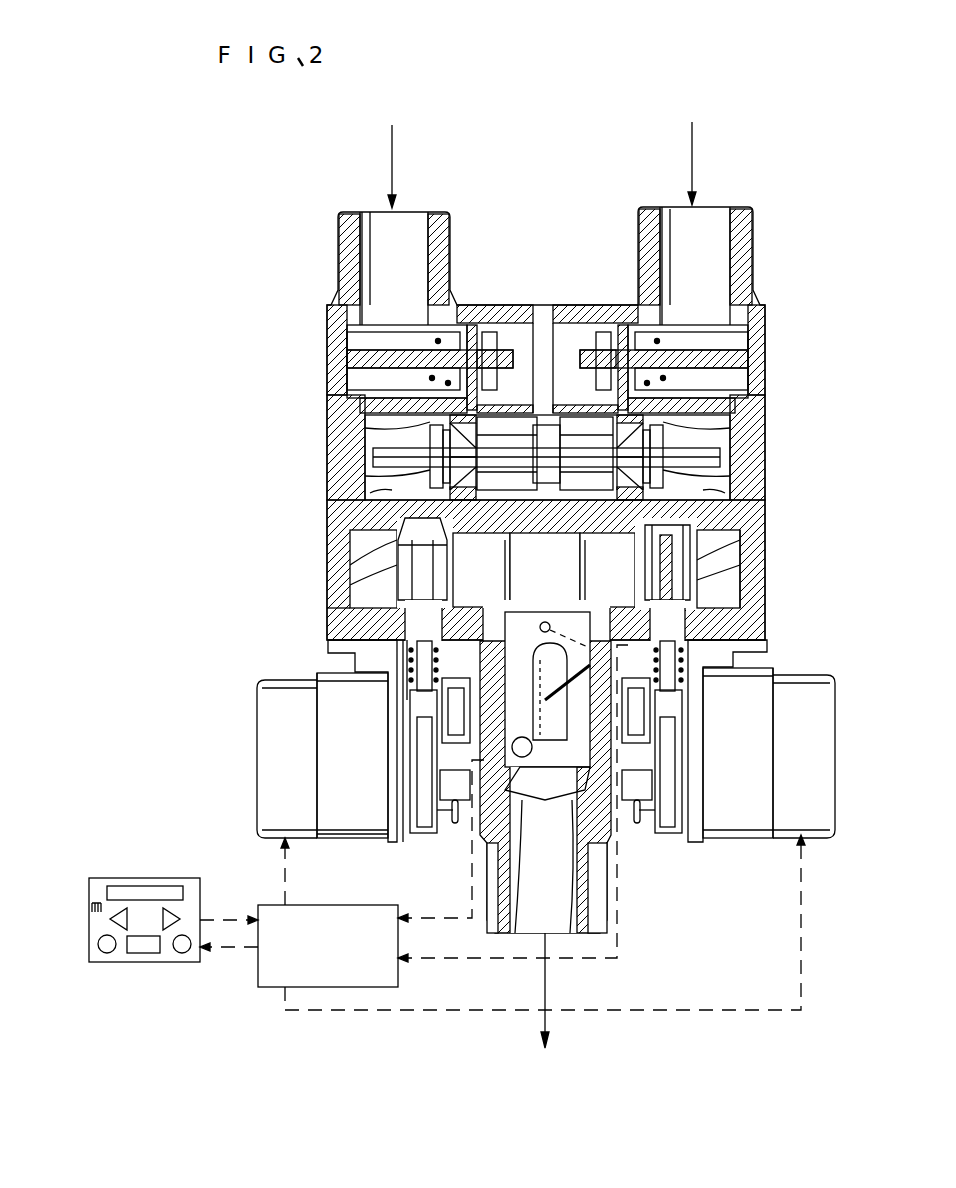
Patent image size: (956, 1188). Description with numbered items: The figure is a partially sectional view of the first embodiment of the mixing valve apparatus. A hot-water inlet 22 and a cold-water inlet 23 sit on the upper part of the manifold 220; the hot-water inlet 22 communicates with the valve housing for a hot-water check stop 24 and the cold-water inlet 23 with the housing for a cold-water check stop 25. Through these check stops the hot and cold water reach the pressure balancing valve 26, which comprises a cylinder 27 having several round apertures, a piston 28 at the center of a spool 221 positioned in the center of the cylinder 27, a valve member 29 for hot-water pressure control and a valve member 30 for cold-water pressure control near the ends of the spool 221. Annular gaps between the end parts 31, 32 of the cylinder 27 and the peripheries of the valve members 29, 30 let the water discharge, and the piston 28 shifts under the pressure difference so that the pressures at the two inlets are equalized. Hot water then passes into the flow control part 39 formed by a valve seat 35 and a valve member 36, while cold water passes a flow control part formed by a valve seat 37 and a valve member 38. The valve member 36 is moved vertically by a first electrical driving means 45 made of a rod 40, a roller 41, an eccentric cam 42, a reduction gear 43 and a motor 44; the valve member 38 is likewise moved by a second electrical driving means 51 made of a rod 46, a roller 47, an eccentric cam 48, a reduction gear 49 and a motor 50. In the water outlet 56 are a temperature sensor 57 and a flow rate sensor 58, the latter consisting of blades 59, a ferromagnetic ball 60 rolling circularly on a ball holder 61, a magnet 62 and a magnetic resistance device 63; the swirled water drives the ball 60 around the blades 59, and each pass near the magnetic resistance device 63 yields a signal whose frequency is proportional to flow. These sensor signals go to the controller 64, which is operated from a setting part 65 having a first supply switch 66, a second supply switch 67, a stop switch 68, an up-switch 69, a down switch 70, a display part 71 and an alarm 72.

The hot-water inlet 22 is at (415, 250).
The cold-water inlet 23 is at (715, 245).
The manifold 220 is at (572, 306).
The spool 221 is at (770, 466).
The hot-water check stop 24 is at (487, 335).
The cold-water check stop 25 is at (600, 335).
The pressure balancing valve 26 is at (770, 447).
The cylinder 27 is at (515, 415).
The piston 28 is at (545, 408).
The valve member for hot-water pressure control 29 is at (365, 470).
The valve member for cold-water pressure control 30 is at (770, 478).
The end part of the cylinder 31 is at (365, 425).
The end part of the cylinder 32 is at (770, 412).
The valve seat 35 is at (352, 543).
The valve member 36 is at (356, 570).
The valve seat 37 is at (745, 535).
The valve member 38 is at (745, 552).
The flow control part 39 is at (770, 585).
The rod 40 is at (340, 618).
The roller 41 is at (385, 735).
The eccentric cam 42 is at (423, 835).
The reduction gear 43 is at (395, 685).
The motor 44 is at (262, 740).
The first electrical driving means 45 is at (262, 697).
The rod 46 is at (768, 602).
The roller 47 is at (700, 725).
The eccentric cam 48 is at (668, 835).
The reduction gear 49 is at (740, 840).
The motor 50 is at (833, 758).
The second electrical driving means 51 is at (700, 660).
The water outlet 56 is at (567, 935).
The temperature sensor 57 is at (530, 600).
The flow rate sensor 58 is at (500, 935).
The blades 59 is at (618, 660).
The ball 60 is at (520, 935).
The ball holder 61 is at (603, 858).
The magnet 62 is at (495, 720).
The magnetic resistance device 63 is at (430, 698).
The controller 64 is at (270, 988).
The setting part 65 is at (108, 878).
The first supply switch 66 is at (183, 955).
The second supply switch 67 is at (107, 955).
The stop switch 68 is at (143, 955).
The up-switch 69 is at (185, 915).
The down switch 70 is at (108, 925).
The display part 71 is at (150, 893).
The alarm 72 is at (90, 905).